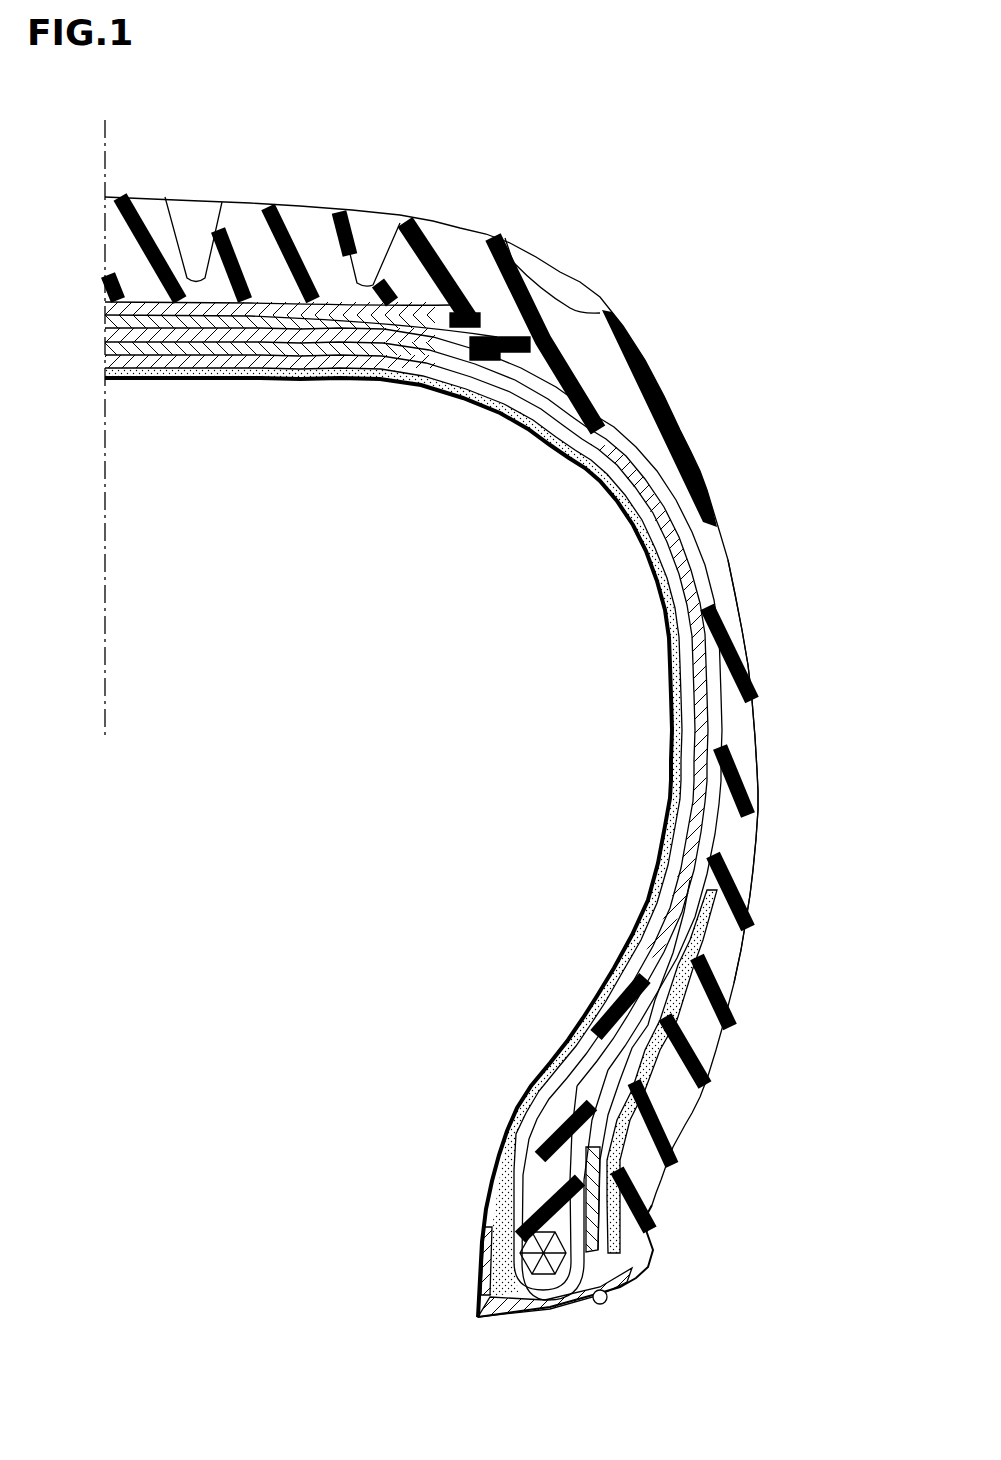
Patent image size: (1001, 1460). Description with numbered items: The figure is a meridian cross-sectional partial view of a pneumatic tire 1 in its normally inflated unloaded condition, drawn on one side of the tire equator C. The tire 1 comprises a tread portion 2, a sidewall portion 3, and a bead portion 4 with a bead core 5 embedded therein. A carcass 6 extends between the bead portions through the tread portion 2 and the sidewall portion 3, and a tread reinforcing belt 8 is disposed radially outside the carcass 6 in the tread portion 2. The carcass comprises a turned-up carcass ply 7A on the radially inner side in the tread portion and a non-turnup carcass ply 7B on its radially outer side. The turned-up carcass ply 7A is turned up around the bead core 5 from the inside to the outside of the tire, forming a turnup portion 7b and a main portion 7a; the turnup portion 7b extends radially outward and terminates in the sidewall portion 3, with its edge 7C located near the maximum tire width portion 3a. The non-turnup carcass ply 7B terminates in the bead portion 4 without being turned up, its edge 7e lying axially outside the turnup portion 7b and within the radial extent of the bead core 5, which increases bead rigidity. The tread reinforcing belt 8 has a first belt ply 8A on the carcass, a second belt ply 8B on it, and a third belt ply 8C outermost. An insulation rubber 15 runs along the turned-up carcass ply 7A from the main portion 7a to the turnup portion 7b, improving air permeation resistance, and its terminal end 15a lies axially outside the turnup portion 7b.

The pneumatic tire 1 is at (716, 175).
The tread portion 2 is at (472, 178).
The sidewall portion 3 is at (768, 580).
The maximum tire width portion 3a is at (770, 772).
The bead portion 4 is at (790, 1275).
The bead core 5 is at (540, 1276).
The carcass 6 is at (392, 712).
The turned-up carcass ply 7A is at (460, 820).
The main portion 7a is at (610, 1000).
The turnup portion 7b is at (643, 907).
The non-turnup carcass ply 7B is at (717, 793).
The edge of turnup portion 7C is at (700, 745).
The edge of non-turnup carcass ply 7e is at (597, 1284).
The tread reinforcing belt 8 is at (205, 141).
The first belt ply 8A is at (228, 335).
The second belt ply 8B is at (275, 320).
The third belt ply 8C is at (320, 308).
The insulation rubber 15 is at (507, 1160).
The terminal end of insulation rubber 15a is at (627, 1222).
The tire equator C is at (105, 417).